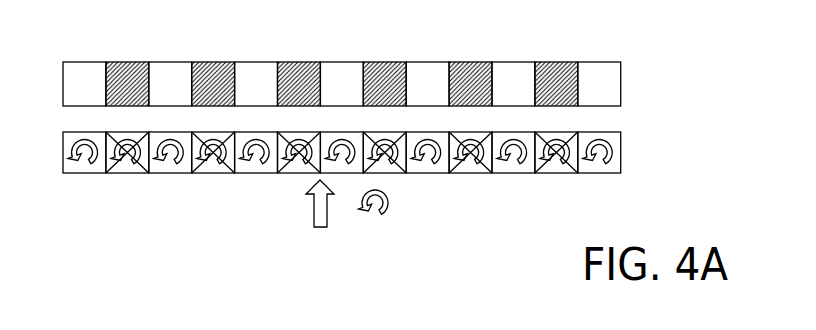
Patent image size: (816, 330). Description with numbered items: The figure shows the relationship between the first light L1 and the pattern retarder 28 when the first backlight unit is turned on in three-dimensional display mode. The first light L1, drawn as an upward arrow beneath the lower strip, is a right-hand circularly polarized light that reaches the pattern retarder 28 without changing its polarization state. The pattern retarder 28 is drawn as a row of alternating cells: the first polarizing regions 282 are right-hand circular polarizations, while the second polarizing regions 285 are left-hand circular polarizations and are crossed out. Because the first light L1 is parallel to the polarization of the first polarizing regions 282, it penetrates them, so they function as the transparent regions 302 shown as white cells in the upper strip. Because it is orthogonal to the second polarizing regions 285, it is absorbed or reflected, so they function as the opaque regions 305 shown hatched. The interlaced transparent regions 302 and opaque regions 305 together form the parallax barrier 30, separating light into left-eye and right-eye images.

The parallax barrier 30 is at (367, 64).
The transparent regions 302 is at (85, 71).
The opaque regions 305 is at (126, 69).
The pattern retarder 28 is at (369, 177).
The first polarizing regions 282 is at (85, 173).
The second polarizing regions 285 is at (124, 173).
The first light L1 is at (320, 222).